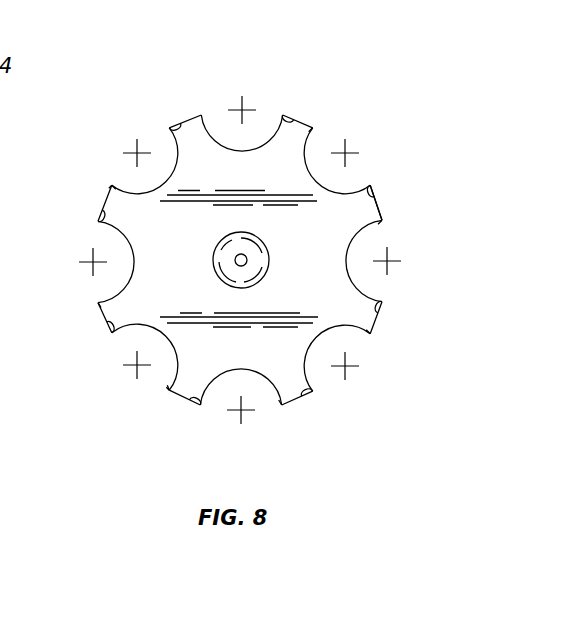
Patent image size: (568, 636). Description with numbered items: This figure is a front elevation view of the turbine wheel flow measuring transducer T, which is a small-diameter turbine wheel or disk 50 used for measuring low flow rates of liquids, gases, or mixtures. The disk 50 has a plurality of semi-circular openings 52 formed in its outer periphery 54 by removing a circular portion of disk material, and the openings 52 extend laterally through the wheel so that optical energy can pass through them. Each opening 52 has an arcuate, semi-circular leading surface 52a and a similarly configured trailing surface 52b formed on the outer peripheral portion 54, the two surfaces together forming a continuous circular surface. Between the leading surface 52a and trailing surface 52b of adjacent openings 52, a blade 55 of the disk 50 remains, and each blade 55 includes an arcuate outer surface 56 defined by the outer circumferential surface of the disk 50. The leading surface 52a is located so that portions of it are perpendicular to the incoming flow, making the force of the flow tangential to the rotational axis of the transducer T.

The turbine wheel flow measuring transducer T is at (343, 54).
The turbine wheel disk 50 is at (241, 302).
The semi-circular opening 52 is at (148, 138).
The leading surface 52a is at (308, 391).
The trailing surface 52b is at (375, 330).
The outer periphery 54 is at (368, 190).
The blade 55 is at (293, 127).
The arcuate outer surface 56 is at (172, 125).